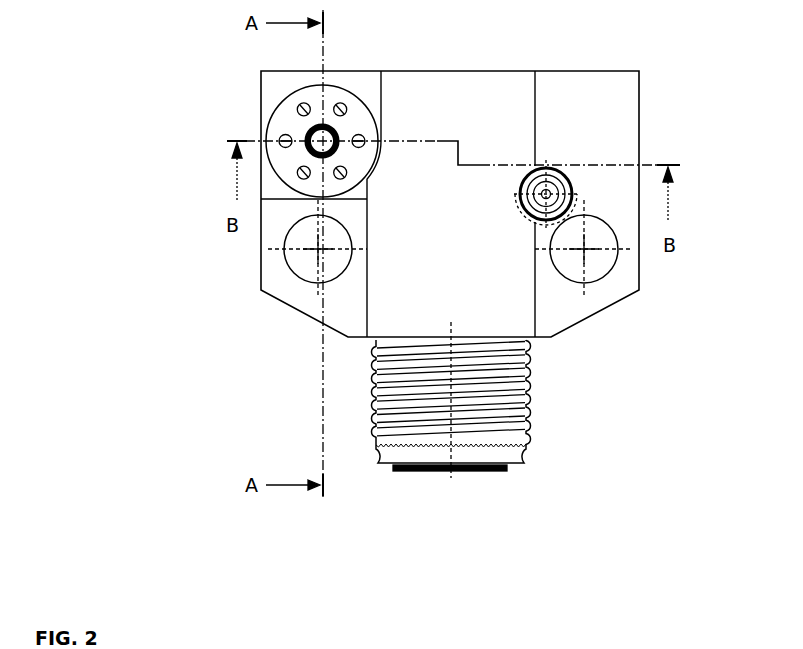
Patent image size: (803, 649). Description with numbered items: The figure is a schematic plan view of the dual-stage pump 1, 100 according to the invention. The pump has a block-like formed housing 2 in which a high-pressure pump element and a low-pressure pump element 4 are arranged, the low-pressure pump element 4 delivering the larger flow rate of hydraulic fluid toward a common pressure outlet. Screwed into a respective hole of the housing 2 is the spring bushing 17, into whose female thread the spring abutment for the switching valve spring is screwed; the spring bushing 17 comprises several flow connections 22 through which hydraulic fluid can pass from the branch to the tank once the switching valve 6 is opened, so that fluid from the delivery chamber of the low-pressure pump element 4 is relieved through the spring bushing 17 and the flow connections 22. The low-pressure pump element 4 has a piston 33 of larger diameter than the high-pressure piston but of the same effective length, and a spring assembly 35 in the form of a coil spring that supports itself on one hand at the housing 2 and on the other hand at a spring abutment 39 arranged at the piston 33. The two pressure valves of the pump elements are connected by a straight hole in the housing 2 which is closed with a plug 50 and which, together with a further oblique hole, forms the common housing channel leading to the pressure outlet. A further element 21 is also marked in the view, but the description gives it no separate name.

The dual-stage pump 1 is at (162, 176).
The dual-stage pump 100 is at (378, 271).
The housing 2 is at (577, 80).
The low-pressure pump element 4 is at (548, 447).
The switching valve 6 is at (364, 121).
The spring bushing 17 is at (284, 121).
The central bore 21 is at (314, 131).
The flow connections 22 is at (344, 104).
The piston 33 is at (428, 470).
The spring assembly 35 is at (527, 372).
The spring abutment 39 is at (508, 460).
The plug 50 is at (563, 173).